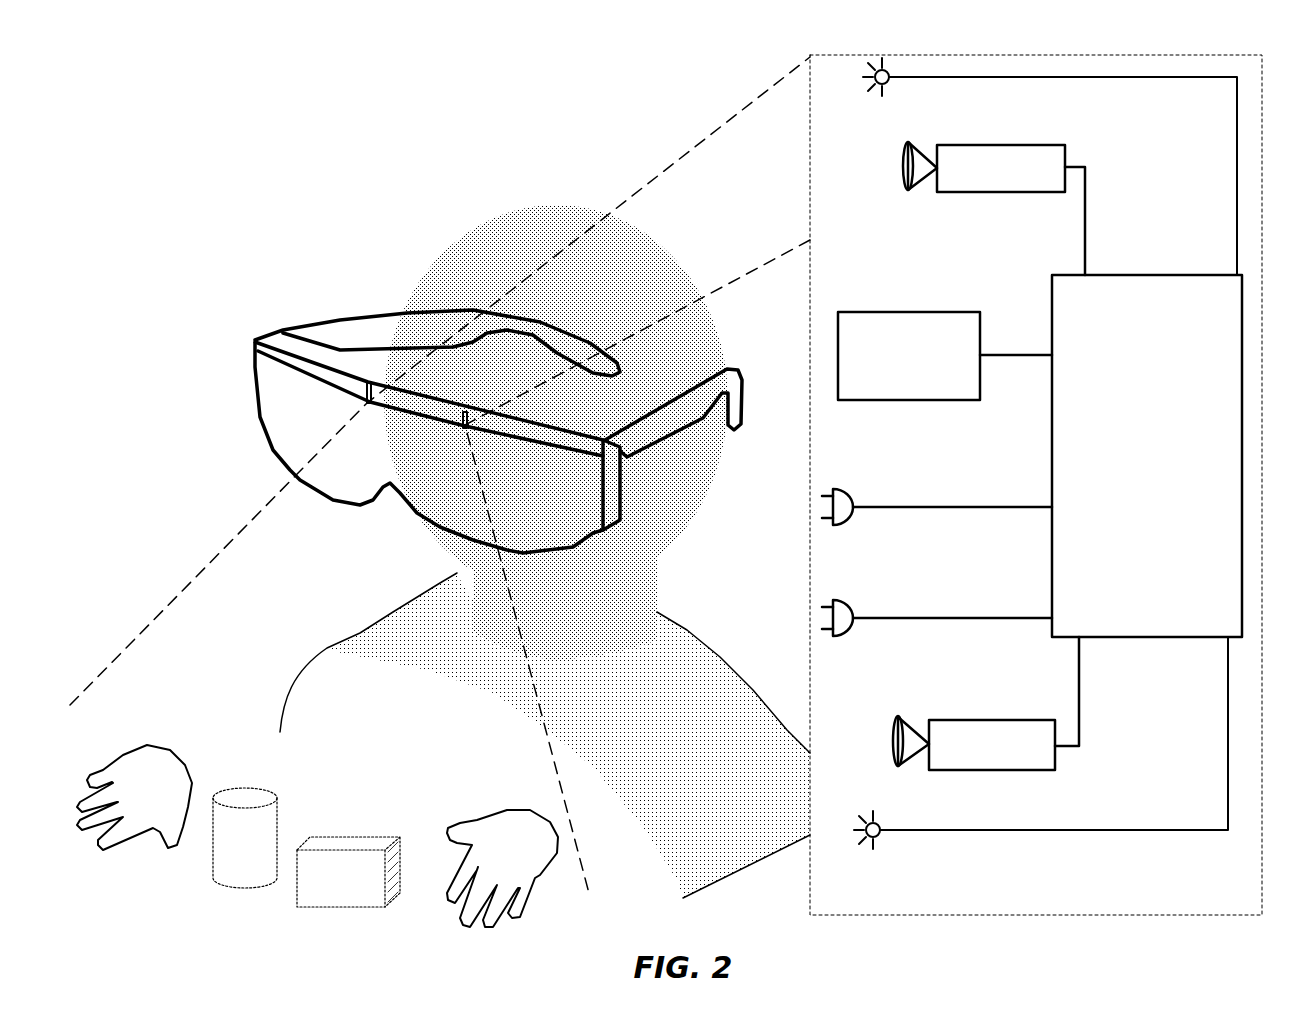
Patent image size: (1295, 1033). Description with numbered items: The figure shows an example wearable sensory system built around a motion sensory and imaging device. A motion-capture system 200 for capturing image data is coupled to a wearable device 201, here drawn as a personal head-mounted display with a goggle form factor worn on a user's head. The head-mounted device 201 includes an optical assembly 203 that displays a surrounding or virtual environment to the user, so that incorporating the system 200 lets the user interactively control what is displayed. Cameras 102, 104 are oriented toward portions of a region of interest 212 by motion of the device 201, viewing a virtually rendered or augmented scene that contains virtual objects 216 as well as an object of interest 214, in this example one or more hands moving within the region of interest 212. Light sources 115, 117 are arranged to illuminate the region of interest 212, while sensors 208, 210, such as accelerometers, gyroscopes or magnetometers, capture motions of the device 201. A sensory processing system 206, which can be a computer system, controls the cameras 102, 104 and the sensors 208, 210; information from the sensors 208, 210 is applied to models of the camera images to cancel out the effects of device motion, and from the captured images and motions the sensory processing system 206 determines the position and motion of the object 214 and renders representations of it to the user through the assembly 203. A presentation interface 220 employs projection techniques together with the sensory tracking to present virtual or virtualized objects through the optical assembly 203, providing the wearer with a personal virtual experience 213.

The system 200 is at (1195, 120).
The camera 102 is at (1018, 145).
The camera 104 is at (989, 771).
The light source 115 is at (882, 836).
The light source 117 is at (890, 84).
The sensory processing system 206 is at (1175, 273).
The sensor 208 is at (855, 489).
The sensor 210 is at (851, 598).
The presentation interface 220 is at (853, 311).
The wearable device 201 is at (250, 343).
The optical assembly 203 is at (287, 437).
The region of interest 212 is at (147, 580).
The personal virtual experience 213 is at (248, 715).
The object of interest 214 is at (170, 800).
The virtual objects 216 is at (262, 851).